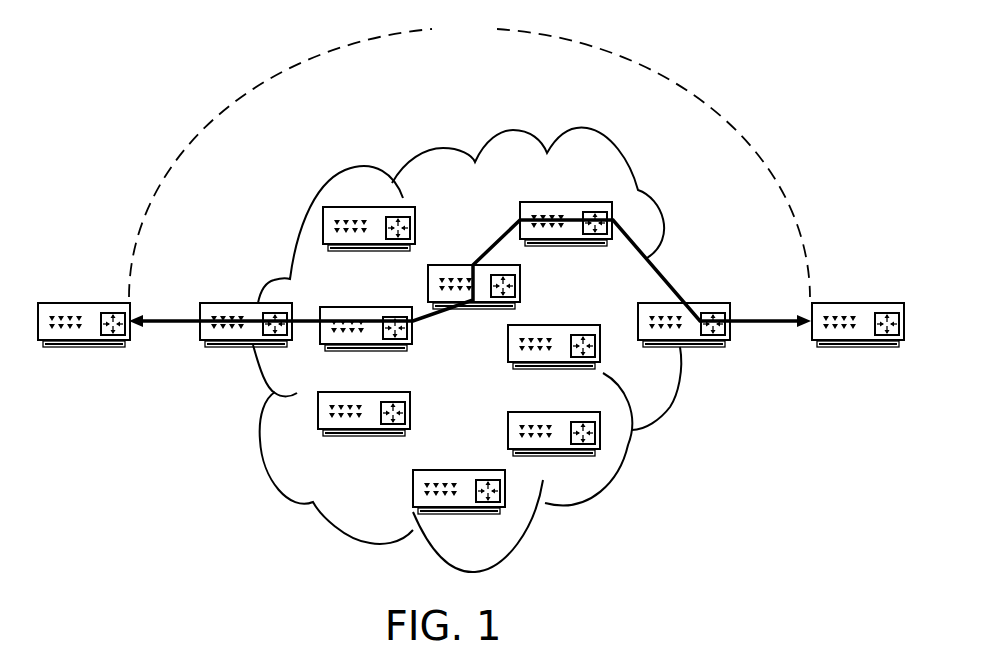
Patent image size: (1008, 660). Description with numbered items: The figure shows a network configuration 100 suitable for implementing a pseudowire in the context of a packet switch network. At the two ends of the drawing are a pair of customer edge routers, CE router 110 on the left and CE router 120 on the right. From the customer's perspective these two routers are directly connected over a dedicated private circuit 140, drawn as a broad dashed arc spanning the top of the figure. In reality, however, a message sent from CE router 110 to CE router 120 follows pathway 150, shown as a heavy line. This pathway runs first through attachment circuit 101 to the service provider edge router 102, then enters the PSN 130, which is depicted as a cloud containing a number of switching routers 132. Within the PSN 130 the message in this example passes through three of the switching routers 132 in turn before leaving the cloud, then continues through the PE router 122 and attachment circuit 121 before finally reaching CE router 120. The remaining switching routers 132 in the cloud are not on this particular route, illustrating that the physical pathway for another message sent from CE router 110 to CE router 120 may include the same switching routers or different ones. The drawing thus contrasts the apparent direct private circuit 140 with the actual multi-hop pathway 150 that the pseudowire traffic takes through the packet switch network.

The network configuration 100 is at (150, 112).
The attachment circuit 101 is at (167, 328).
The service provider edge router 102 is at (246, 314).
The CE router 110 is at (84, 314).
The CE router 120 is at (858, 314).
The attachment circuit 121 is at (768, 322).
The PE router 122 is at (684, 313).
The PSN 130 is at (467, 350).
The switching routers 132 is at (465, 346).
The dedicated private circuit 140 is at (469, 158).
The pathway 150 is at (670, 298).